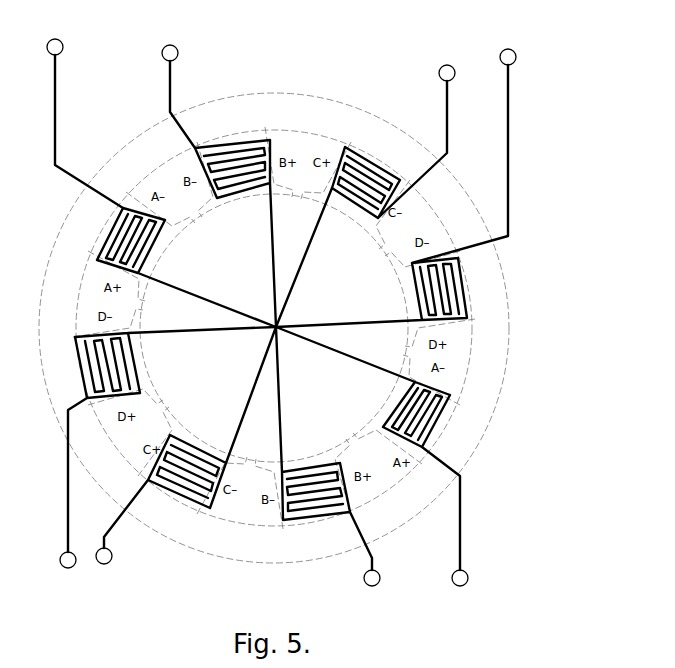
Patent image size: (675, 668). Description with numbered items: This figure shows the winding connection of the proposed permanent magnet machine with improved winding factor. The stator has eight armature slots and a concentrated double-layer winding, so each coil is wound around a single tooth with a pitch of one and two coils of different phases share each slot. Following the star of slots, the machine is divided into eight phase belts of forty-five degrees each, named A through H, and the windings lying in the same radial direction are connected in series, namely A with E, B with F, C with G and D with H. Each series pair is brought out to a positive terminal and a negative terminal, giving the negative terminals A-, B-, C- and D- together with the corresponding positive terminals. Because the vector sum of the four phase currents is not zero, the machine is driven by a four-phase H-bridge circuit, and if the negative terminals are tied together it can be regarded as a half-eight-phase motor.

The negative terminal of phase A A- is at (161, 170).
The negative terminal of phase B B- is at (218, 175).
The negative terminal of phase C C- is at (365, 185).
The negative terminal of phase D D- is at (396, 181).